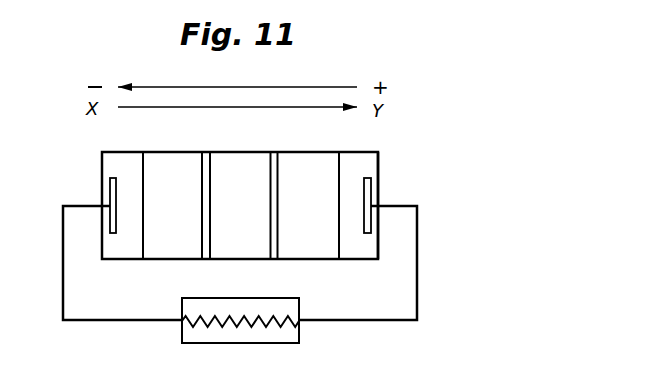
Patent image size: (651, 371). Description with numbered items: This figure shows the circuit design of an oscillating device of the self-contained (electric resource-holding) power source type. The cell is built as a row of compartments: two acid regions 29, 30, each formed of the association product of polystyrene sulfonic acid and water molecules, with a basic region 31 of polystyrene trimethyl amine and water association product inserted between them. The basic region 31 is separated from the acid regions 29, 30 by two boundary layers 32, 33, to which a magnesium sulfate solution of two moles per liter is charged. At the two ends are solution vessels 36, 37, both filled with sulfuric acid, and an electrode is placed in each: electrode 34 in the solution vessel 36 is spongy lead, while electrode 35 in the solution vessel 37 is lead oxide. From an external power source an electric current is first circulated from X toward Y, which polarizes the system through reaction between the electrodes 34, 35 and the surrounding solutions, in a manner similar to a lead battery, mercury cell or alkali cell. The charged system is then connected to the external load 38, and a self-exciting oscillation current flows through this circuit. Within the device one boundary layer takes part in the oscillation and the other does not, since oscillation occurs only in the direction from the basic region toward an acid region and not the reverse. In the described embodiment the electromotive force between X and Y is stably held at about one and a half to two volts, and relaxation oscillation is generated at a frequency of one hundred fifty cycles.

The acid region 29 is at (160, 160).
The acid region 30 is at (329, 135).
The basic region 31 is at (225, 160).
The boundary layer 32 is at (205, 252).
The boundary layer 33 is at (284, 137).
The electrode 34 is at (112, 178).
The electrode 35 is at (371, 182).
The solution vessel 36 is at (119, 158).
The solution vessel 37 is at (357, 167).
The external load 38 is at (270, 314).